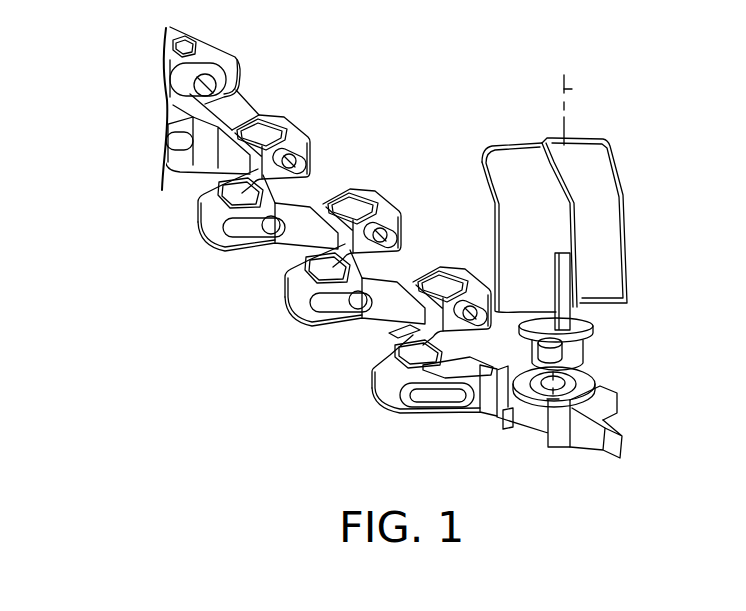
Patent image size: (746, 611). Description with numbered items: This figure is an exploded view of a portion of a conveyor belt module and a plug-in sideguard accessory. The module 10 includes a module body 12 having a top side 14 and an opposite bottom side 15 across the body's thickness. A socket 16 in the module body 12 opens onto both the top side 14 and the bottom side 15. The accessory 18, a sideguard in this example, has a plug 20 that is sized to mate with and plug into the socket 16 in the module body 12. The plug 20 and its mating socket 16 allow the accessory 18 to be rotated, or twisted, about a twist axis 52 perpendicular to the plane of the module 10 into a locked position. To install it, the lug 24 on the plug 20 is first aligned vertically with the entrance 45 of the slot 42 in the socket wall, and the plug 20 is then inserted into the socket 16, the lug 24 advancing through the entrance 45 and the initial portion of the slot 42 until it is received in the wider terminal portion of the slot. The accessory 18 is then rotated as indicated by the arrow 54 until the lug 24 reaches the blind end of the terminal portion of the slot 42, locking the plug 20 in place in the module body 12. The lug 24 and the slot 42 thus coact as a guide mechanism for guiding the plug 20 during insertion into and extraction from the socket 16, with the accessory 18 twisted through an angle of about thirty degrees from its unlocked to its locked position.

The module 10 is at (331, 221).
The module body 12 is at (378, 310).
The top side 14 is at (305, 200).
The bottom side 15 is at (290, 244).
The socket 16 is at (578, 390).
The accessory 18 is at (622, 183).
The plug 20 is at (577, 344).
The lug 24 is at (563, 440).
The slot 42 is at (548, 349).
The entrance 45 is at (553, 362).
The twist axis 52 is at (575, 90).
The arrow 54 is at (547, 117).